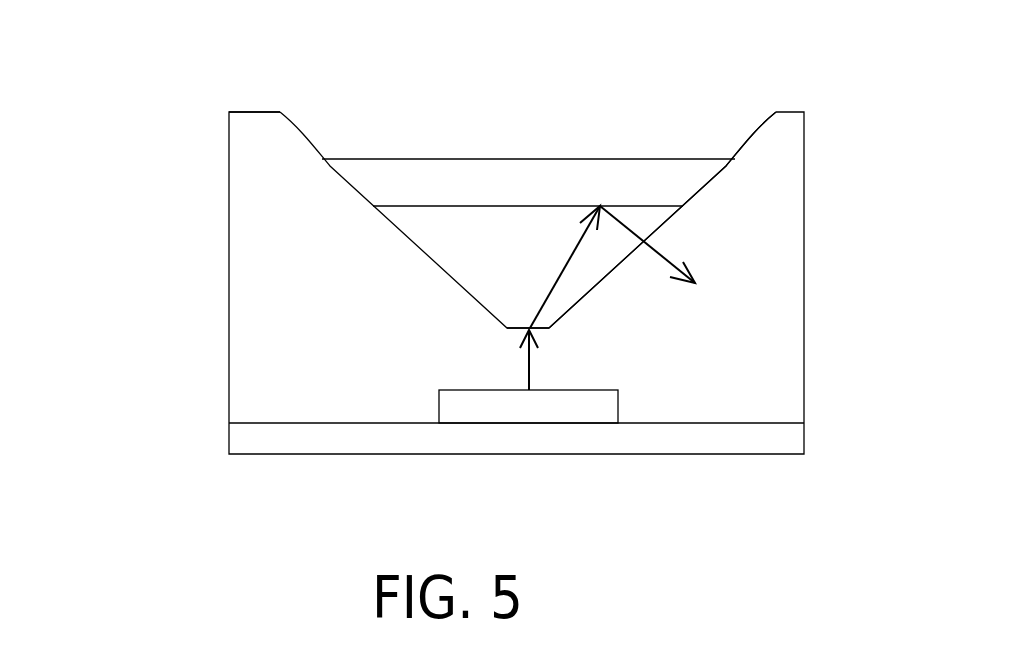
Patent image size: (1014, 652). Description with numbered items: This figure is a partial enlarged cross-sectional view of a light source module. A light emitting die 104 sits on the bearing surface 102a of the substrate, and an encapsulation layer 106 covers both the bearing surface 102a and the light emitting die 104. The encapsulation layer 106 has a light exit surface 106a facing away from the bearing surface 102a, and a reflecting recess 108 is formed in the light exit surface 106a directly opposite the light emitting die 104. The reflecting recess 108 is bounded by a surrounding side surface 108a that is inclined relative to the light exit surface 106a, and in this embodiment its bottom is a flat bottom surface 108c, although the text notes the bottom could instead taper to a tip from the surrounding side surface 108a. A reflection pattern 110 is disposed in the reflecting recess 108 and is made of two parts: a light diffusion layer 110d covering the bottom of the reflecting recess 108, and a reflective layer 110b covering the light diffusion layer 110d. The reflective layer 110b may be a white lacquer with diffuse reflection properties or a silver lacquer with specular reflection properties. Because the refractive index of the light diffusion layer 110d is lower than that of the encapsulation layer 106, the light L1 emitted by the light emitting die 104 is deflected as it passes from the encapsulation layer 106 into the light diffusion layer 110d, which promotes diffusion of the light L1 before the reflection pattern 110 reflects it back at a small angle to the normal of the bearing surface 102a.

The bearing surface 102a is at (713, 423).
The light emitting die 104 is at (512, 405).
The encapsulation layer 106 is at (752, 270).
The light exit surface 106a is at (256, 110).
The reflecting recess 108 is at (483, 142).
The surrounding side surface 108a is at (713, 180).
The bottom surface 108c is at (513, 337).
The reflection pattern 110 is at (382, 210).
The reflective layer 110b is at (367, 172).
The light diffusion layer 110d is at (447, 247).
The light L1 is at (653, 253).